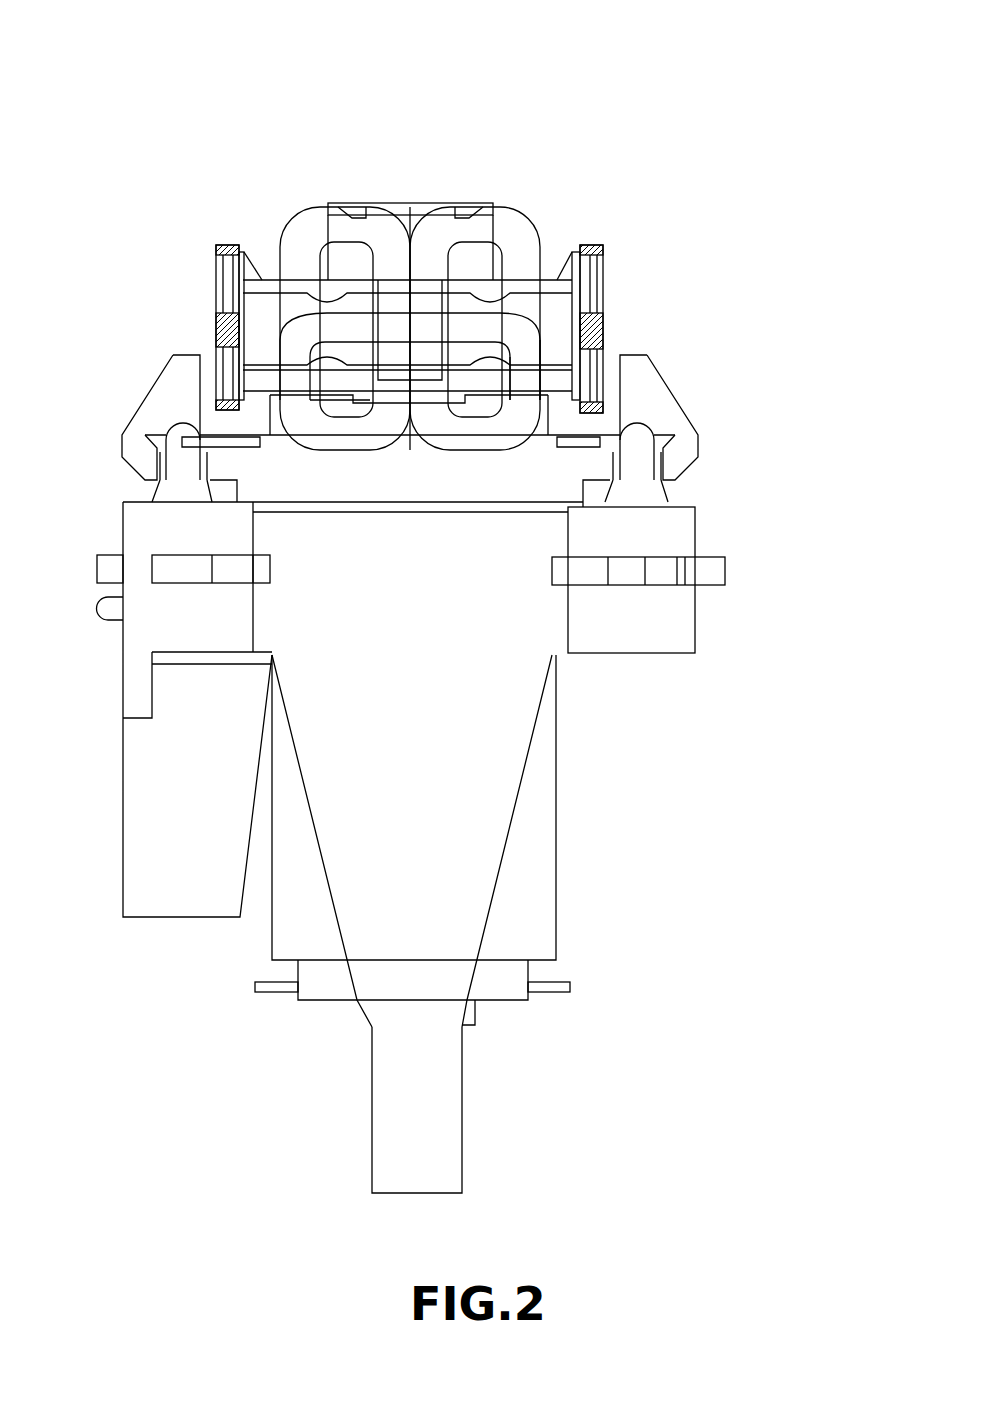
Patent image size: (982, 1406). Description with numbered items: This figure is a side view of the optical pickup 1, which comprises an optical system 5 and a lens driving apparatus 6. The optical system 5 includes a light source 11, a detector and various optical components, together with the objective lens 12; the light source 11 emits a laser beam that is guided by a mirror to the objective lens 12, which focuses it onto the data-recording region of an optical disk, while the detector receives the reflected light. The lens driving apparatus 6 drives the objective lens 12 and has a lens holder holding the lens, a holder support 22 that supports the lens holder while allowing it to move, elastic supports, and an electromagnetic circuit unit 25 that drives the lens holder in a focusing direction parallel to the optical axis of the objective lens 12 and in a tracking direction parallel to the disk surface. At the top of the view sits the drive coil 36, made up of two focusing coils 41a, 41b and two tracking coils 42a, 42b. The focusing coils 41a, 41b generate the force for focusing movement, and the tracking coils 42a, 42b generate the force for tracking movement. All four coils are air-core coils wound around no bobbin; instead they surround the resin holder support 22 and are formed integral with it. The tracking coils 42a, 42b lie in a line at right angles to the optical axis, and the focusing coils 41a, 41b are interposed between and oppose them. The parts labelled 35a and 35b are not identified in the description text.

The optical pickup 1 is at (728, 1048).
The optical system 5 is at (497, 707).
The lens driving apparatus 6 is at (655, 233).
The light source 11 is at (478, 1007).
The objective lens 12 is at (408, 222).
The holder support 22 is at (557, 470).
The electromagnetic circuit unit 25 is at (203, 198).
The bobbin 35a is at (460, 353).
The bobbin 35b is at (666, 358).
The drive coil 36 is at (648, 52).
The focusing coil 41a is at (513, 333).
The focusing coil 41b is at (591, 243).
The tracking coil 42a is at (310, 227).
The tracking coil 42b is at (507, 227).